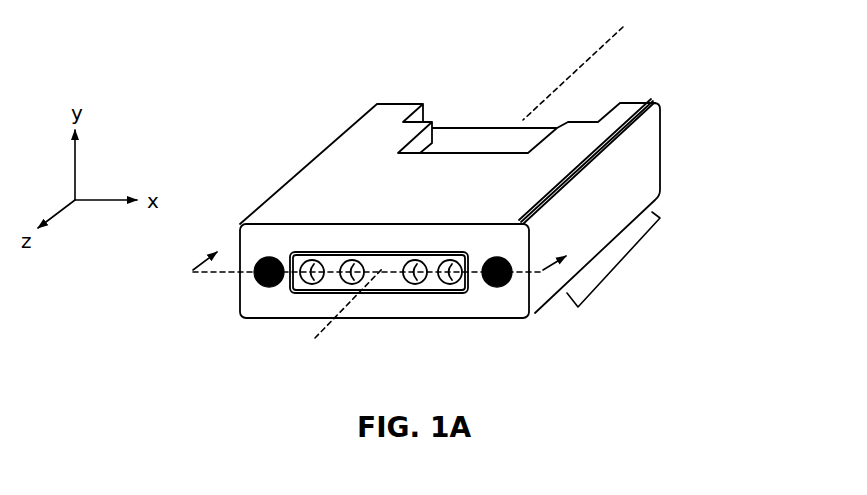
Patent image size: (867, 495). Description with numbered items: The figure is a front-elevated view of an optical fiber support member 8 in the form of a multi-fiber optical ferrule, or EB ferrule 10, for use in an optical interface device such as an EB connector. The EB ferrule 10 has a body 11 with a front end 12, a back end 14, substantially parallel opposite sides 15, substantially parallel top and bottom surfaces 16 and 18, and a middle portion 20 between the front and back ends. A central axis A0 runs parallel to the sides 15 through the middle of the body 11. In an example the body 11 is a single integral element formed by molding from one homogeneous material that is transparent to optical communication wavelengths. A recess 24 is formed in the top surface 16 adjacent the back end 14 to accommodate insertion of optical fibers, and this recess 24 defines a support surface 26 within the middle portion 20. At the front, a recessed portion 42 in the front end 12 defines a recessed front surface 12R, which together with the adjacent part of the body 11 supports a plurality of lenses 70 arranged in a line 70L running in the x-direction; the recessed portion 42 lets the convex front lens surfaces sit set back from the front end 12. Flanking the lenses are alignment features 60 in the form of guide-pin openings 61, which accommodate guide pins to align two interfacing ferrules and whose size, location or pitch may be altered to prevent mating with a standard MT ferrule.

The optical fiber support member 8 is at (231, 100).
The EB ferrule 10 is at (458, 212).
The body 11 is at (348, 150).
The front end 12 is at (248, 305).
The recessed front surface 12R is at (382, 262).
The back end 14 is at (662, 135).
The sides 15 is at (643, 170).
The top surface 16 is at (292, 205).
The bottom surface 18 is at (653, 200).
The middle portion 20 is at (620, 268).
The recess 24 is at (452, 118).
The support surface 26 is at (492, 135).
The recessed portion 42 is at (390, 284).
The alignment features 60 is at (255, 250).
The guide-pin openings 61 is at (273, 287).
The lenses 70 is at (417, 285).
The line 70L is at (223, 273).
The central axis A0 is at (603, 45).